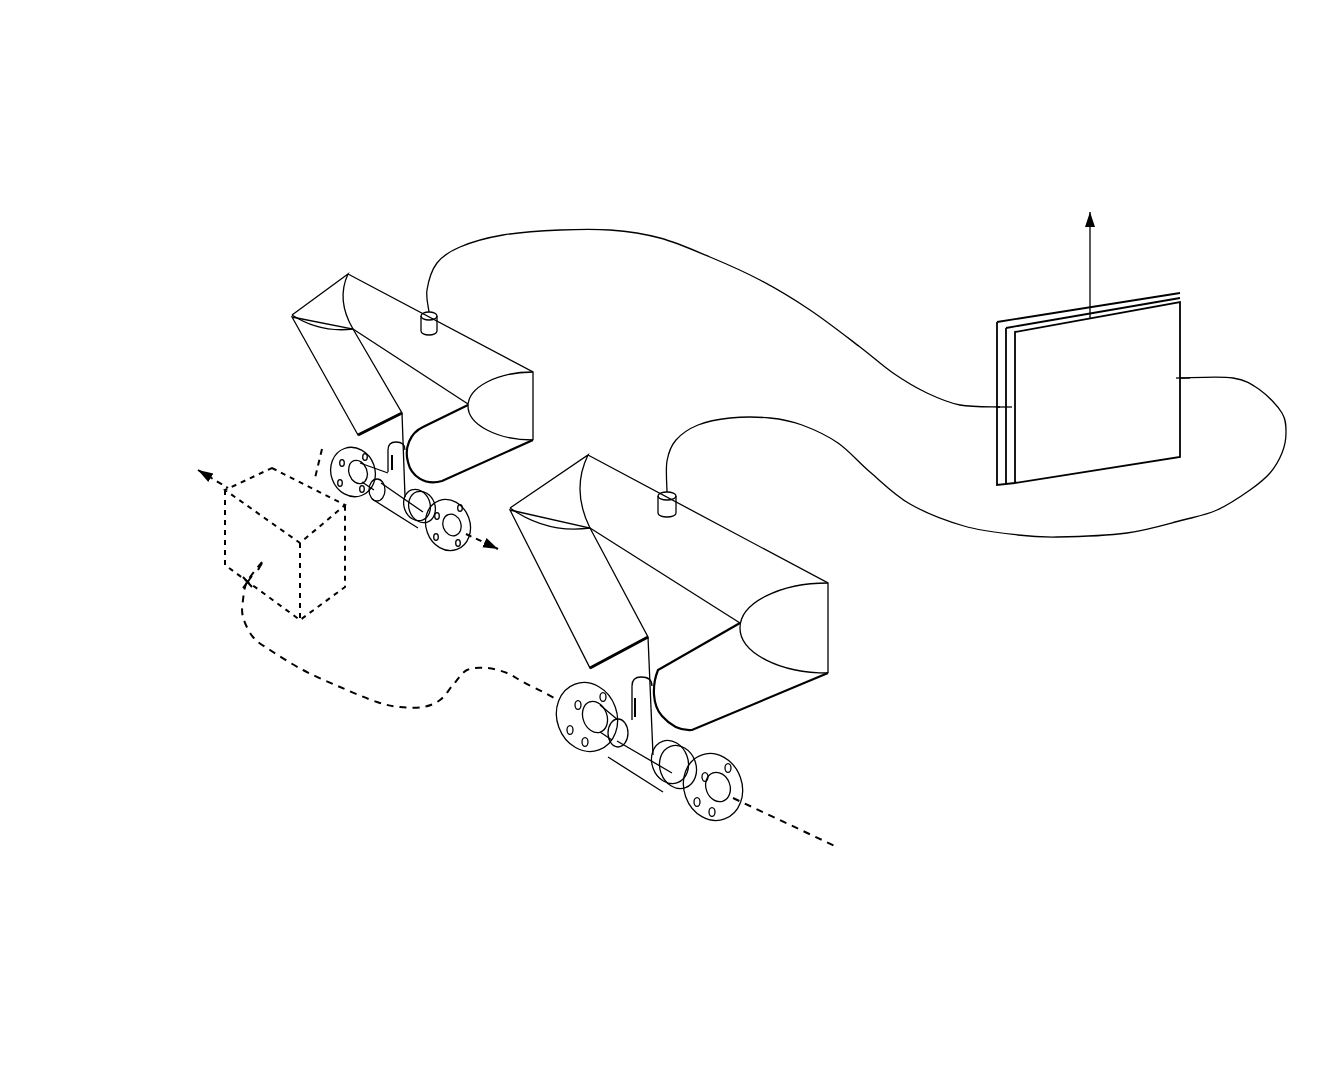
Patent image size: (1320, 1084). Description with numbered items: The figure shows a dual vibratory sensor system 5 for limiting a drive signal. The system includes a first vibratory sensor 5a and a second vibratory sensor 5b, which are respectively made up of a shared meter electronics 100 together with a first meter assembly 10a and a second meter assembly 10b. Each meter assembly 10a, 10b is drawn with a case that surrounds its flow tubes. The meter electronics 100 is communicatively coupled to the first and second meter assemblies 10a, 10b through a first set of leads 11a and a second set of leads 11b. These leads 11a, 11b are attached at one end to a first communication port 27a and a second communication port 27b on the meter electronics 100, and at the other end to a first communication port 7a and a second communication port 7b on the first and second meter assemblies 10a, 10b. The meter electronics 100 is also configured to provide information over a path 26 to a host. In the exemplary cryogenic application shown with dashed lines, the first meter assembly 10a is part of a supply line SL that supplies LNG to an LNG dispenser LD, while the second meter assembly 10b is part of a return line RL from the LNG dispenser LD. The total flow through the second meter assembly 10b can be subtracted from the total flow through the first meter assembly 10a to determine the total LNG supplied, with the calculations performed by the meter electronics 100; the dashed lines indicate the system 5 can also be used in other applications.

The dual vibratory sensor system 5 is at (317, 87).
The first vibratory sensor 5a is at (1015, 710).
The second vibratory sensor 5b is at (458, 203).
The first communication port 7a is at (690, 495).
The second communication port 7b is at (445, 312).
The first meter assembly 10a is at (785, 692).
The second meter assembly 10b is at (318, 295).
The first set of leads 11a is at (1002, 548).
The second set of leads 11b is at (762, 258).
The path 26 is at (1080, 291).
The first communication port 27a is at (985, 380).
The second communication port 27b is at (1192, 368).
The meter electronics 100 is at (1148, 290).
The return line RL is at (290, 440).
The LNG dispenser LD is at (217, 562).
The supply line SL is at (386, 722).